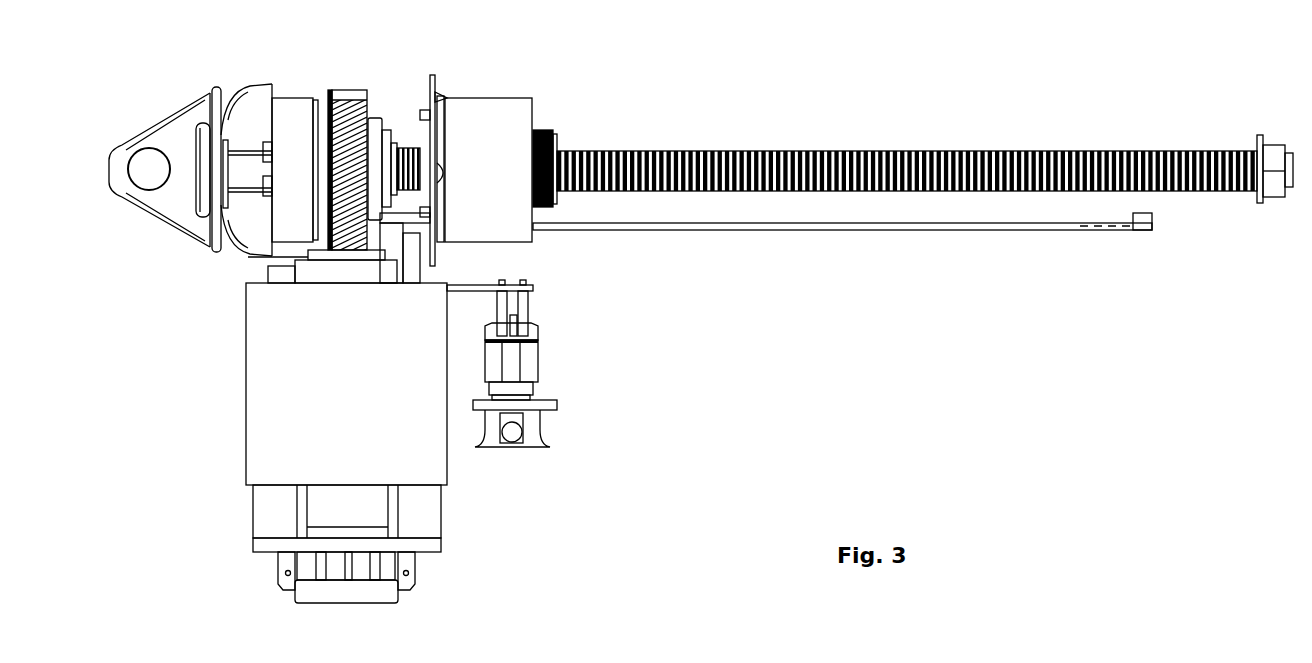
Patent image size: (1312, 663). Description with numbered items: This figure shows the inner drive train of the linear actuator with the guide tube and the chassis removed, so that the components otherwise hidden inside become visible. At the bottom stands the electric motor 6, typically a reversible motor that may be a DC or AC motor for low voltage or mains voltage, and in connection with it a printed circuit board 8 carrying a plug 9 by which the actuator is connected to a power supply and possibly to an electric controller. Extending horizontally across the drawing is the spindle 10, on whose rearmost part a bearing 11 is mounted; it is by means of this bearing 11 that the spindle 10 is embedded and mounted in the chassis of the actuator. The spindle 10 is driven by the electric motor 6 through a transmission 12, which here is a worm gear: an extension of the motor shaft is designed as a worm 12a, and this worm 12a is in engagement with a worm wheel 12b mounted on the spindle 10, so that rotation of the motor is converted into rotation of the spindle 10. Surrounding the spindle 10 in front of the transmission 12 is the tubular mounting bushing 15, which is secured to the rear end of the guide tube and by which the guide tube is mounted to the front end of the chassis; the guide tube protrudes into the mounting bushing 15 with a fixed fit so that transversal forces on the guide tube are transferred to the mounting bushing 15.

The electric motor 6 is at (270, 428).
The printed circuit board 8 is at (533, 288).
The plug 9 is at (530, 360).
The spindle 10 is at (900, 150).
The bearing 11 is at (298, 215).
The transmission 12 is at (339, 141).
The worm 12a is at (327, 105).
The worm wheel 12b is at (365, 95).
The mounting bushing 15 is at (463, 140).